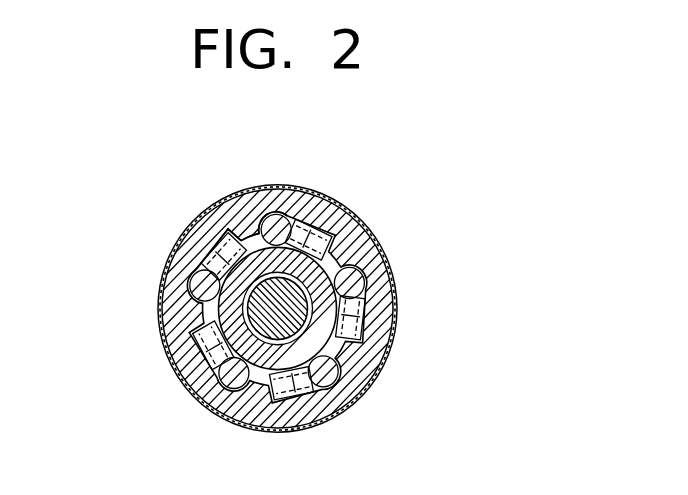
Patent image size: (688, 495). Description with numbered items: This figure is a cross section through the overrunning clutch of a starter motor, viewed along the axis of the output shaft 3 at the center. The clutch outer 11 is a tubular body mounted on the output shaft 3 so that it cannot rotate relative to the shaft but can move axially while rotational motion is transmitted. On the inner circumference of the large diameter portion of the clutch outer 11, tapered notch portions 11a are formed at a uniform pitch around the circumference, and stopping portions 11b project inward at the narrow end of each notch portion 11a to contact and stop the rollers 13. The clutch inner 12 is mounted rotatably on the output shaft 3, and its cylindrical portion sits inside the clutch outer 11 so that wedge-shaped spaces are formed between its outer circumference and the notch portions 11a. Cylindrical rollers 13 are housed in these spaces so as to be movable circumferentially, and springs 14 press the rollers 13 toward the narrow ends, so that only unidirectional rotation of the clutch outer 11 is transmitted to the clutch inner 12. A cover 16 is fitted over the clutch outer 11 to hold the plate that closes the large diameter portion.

The output shaft 3 is at (268, 322).
The clutch outer 11 is at (342, 228).
The notch portions 11a is at (237, 233).
The stopping portions 11b is at (232, 207).
The clutch inner 12 is at (342, 339).
The rollers 13 is at (357, 278).
The springs 14 is at (363, 317).
The cover 16 is at (160, 287).